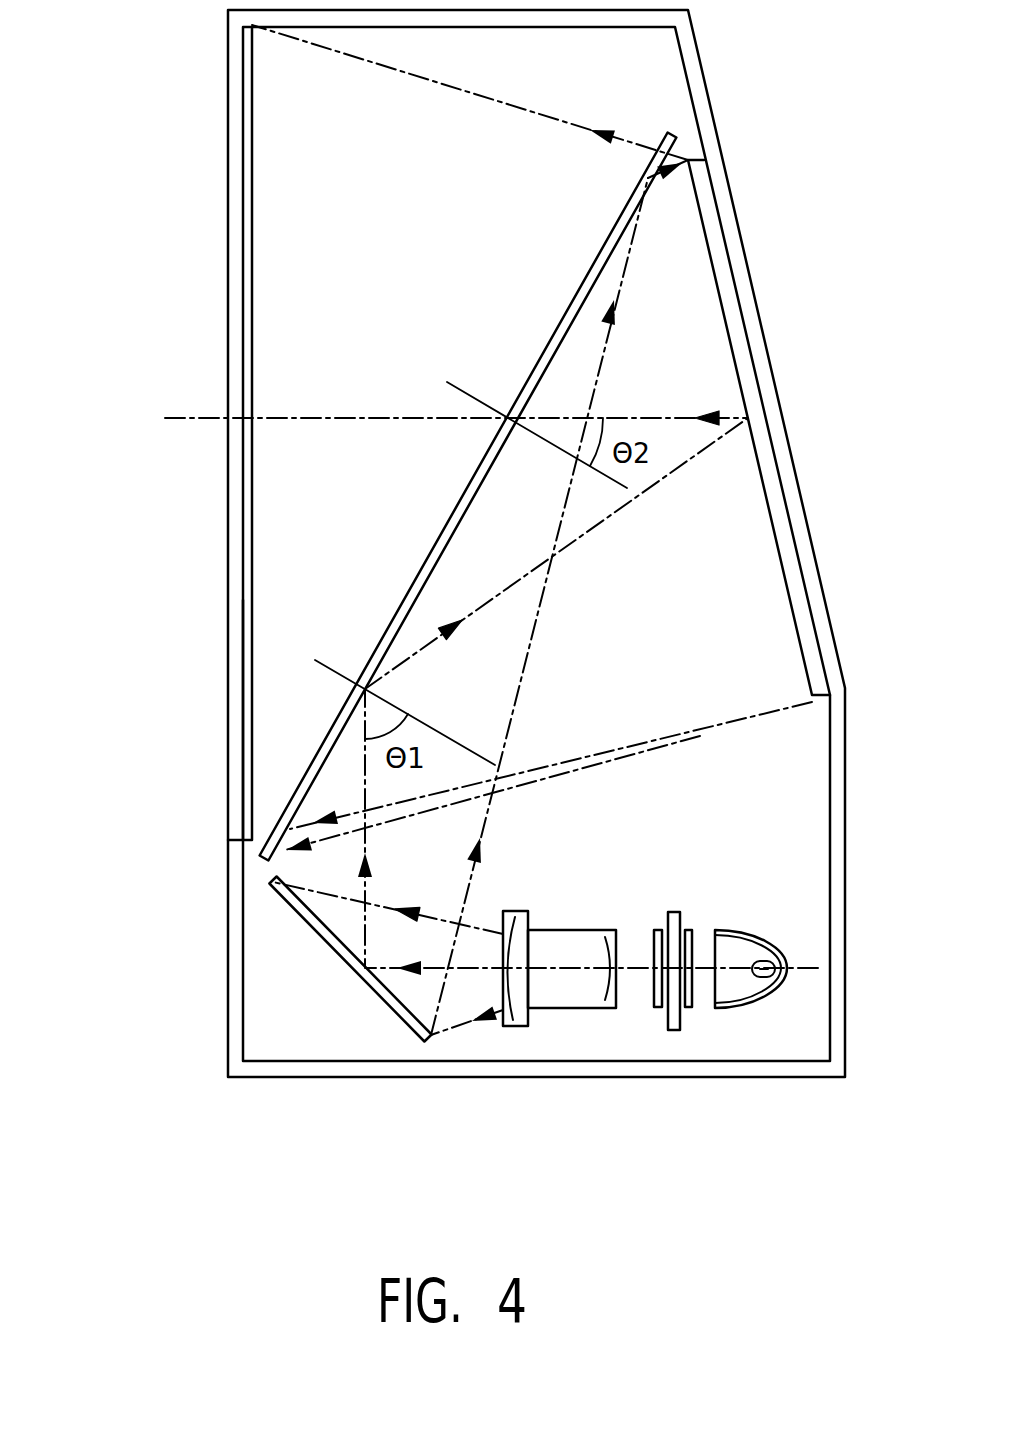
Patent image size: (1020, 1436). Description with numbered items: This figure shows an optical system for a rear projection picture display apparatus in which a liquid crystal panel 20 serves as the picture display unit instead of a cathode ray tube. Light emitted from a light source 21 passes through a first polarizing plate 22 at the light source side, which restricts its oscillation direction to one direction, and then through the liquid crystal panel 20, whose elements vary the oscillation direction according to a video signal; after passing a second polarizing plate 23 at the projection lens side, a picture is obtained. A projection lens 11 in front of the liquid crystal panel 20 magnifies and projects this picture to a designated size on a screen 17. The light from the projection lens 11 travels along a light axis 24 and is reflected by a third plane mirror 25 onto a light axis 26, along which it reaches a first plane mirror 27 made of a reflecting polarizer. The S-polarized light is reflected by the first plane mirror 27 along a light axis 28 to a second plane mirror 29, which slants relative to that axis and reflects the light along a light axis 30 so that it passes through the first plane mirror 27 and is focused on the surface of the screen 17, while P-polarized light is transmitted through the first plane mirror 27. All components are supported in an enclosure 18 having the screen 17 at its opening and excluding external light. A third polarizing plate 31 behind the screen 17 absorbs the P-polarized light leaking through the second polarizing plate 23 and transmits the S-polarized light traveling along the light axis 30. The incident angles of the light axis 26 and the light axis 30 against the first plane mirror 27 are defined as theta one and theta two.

The projection lens 11 is at (568, 1008).
The screen 17 is at (237, 285).
The enclosure 18 is at (237, 897).
The liquid crystal panel 20 is at (674, 1030).
The light source 21 is at (716, 1036).
The first polarizing plate 22 is at (688, 1007).
The second polarizing plate 23 is at (658, 1007).
The light axis 24 is at (463, 967).
The third plane mirror 25 is at (345, 963).
The light axis 26 is at (352, 918).
The first plane mirror 27 is at (297, 797).
The light axis 28 is at (697, 453).
The second plane mirror 29 is at (750, 434).
The light axis 30 is at (665, 418).
The third polarizing plate 31 is at (245, 720).